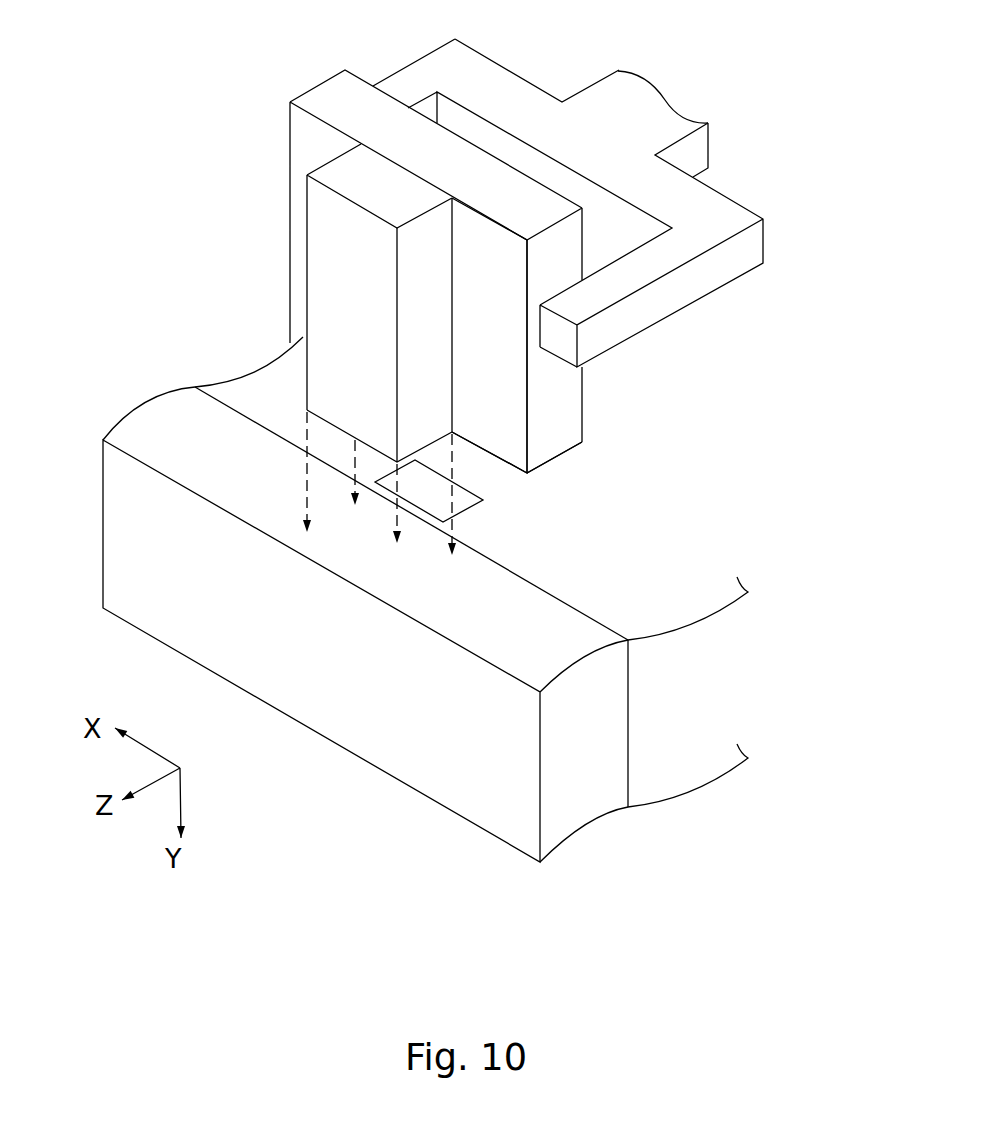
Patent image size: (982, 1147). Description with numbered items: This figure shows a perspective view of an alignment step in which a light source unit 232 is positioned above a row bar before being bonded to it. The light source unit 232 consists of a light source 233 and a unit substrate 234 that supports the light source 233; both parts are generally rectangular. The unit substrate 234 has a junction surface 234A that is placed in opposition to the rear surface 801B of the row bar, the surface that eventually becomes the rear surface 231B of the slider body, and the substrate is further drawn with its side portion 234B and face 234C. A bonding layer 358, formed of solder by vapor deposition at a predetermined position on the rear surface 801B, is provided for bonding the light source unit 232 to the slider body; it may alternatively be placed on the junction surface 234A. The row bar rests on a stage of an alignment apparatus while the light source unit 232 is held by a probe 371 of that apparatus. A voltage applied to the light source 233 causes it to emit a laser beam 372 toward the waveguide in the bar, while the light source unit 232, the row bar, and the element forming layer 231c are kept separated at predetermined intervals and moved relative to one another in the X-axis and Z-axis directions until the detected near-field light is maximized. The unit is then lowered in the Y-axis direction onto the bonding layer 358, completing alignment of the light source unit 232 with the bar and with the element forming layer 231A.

The light source unit 232 is at (182, 25).
The light source 233 is at (338, 173).
The unit substrate 234 is at (493, 292).
The junction surface 234A is at (502, 460).
The side portion of plate member 234B is at (558, 402).
The front face of plate member 234C is at (478, 397).
The probe 371 is at (697, 205).
The laser beam 372 is at (305, 478).
The bonding layer 358 is at (427, 497).
The trailing edge 231c is at (503, 795).
The element forming layer 231A is at (653, 807).
The rear surface 801B is at (740, 760).
The rear surface of the slider body 231B is at (665, 595).